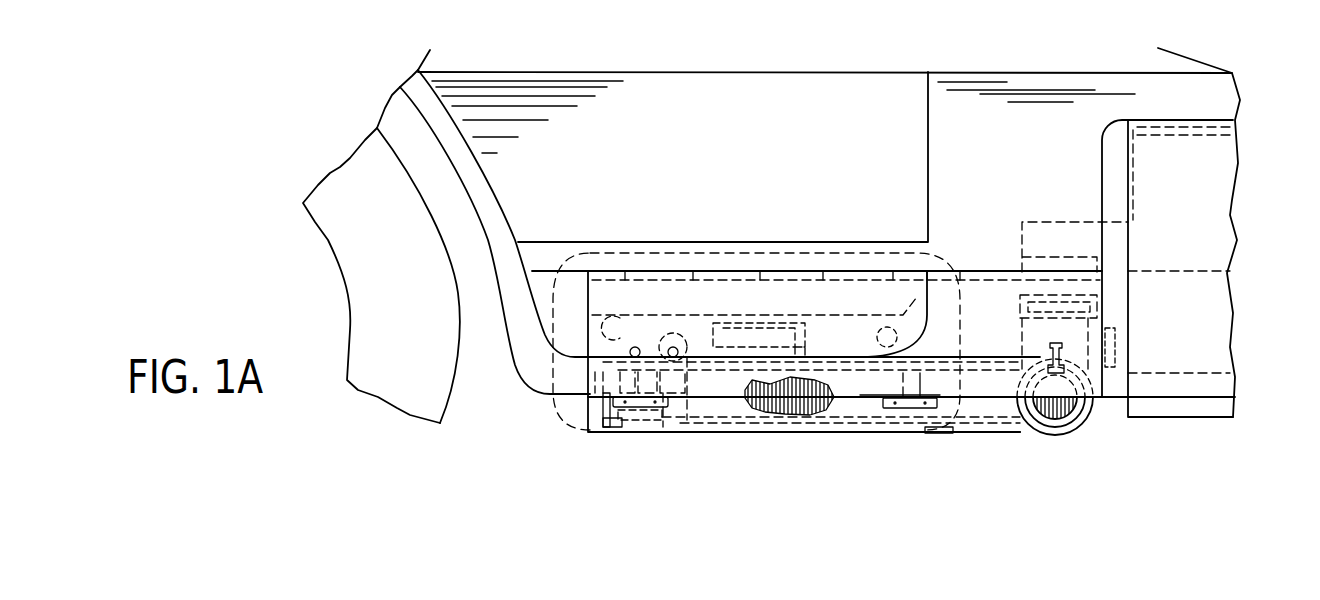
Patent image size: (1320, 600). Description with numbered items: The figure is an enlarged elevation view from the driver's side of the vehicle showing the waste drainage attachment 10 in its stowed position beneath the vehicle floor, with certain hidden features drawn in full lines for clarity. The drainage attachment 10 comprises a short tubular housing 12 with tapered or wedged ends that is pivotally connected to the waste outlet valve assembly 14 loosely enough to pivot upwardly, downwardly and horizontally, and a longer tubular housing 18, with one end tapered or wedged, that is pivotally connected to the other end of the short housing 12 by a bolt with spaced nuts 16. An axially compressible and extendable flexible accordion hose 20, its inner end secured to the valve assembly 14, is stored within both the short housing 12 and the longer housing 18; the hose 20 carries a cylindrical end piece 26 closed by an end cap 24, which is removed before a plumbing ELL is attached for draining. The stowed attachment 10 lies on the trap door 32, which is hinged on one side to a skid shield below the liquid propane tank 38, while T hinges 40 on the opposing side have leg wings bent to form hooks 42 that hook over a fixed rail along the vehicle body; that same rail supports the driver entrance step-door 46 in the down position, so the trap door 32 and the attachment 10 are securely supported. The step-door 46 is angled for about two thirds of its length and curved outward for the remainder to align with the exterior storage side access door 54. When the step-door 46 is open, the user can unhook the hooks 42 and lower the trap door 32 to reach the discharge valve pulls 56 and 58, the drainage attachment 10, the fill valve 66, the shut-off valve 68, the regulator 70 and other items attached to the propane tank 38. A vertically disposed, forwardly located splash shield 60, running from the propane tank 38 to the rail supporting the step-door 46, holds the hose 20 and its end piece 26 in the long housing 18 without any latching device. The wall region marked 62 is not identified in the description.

The waste drainage attachment 10 is at (869, 445).
The short tubular housing 12 is at (1093, 413).
The waste outlet valve assembly 14 is at (1012, 294).
The bolt with spaced nuts 16 is at (1050, 350).
The longer tubular housing 18 is at (995, 433).
The flexible accordion hose 20 is at (773, 413).
The end cap 24 is at (607, 418).
The cylindrical end piece 26 is at (640, 421).
The trap door 32 is at (930, 433).
The liquid propane tank 38 is at (720, 250).
The T hinges 40 is at (880, 395).
The hooks 42 is at (907, 377).
The driver entrance step-door 46 is at (845, 357).
The exterior storage side access door 54 is at (1203, 295).
The discharge valve pull 56 is at (1092, 307).
The discharge valve pull 58 is at (1116, 347).
The splash shield 60 is at (583, 367).
The wall 62 is at (1172, 168).
The fill valve 66 is at (893, 335).
The shut-off valve 68 is at (668, 333).
The regulator 70 is at (755, 340).